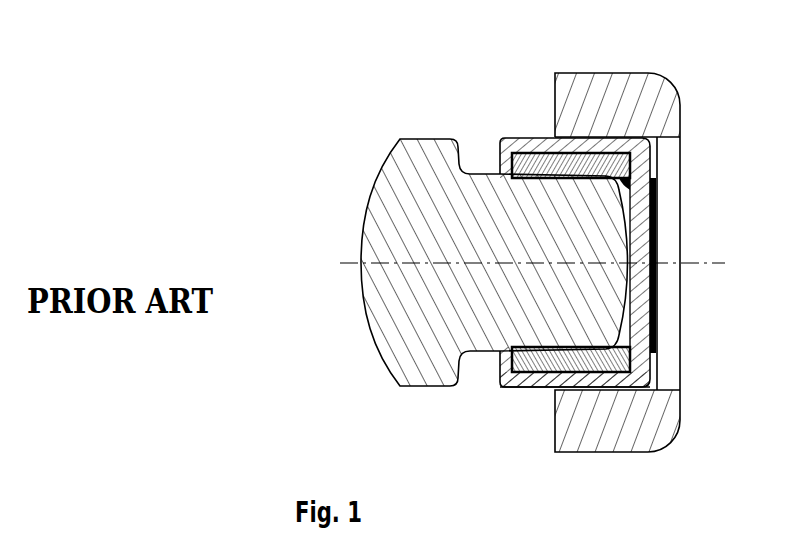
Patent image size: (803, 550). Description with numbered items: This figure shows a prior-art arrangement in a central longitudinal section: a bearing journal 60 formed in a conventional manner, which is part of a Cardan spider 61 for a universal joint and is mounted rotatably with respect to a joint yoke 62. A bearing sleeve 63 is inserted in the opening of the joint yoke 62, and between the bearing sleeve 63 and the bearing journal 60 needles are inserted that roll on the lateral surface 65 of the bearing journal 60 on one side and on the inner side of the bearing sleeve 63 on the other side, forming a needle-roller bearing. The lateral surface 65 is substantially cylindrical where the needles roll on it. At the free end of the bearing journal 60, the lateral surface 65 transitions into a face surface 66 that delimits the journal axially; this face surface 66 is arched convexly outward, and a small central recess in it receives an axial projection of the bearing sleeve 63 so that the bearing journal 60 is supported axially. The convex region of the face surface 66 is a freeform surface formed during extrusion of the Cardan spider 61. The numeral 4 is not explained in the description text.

The adhesive layer 4 is at (557, 360).
The bearing journal 60 is at (500, 363).
The Cardan spider 61 is at (402, 404).
The joint yoke 62 is at (657, 420).
The bearing sleeve 63 is at (593, 382).
The lateral surface 65 is at (568, 163).
The face surface 66 is at (628, 193).